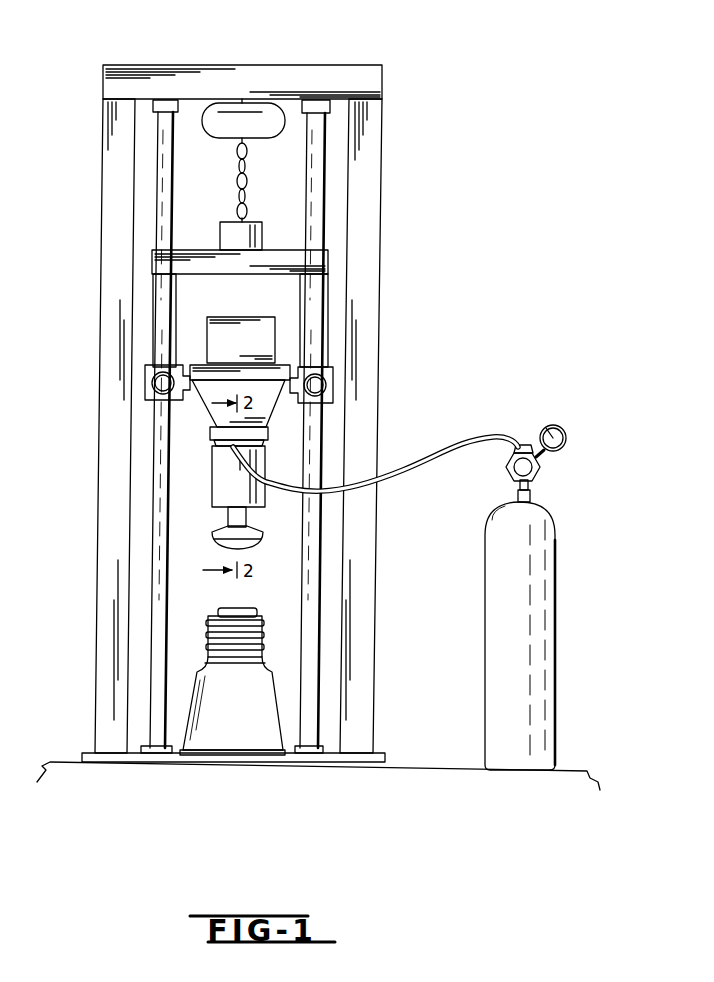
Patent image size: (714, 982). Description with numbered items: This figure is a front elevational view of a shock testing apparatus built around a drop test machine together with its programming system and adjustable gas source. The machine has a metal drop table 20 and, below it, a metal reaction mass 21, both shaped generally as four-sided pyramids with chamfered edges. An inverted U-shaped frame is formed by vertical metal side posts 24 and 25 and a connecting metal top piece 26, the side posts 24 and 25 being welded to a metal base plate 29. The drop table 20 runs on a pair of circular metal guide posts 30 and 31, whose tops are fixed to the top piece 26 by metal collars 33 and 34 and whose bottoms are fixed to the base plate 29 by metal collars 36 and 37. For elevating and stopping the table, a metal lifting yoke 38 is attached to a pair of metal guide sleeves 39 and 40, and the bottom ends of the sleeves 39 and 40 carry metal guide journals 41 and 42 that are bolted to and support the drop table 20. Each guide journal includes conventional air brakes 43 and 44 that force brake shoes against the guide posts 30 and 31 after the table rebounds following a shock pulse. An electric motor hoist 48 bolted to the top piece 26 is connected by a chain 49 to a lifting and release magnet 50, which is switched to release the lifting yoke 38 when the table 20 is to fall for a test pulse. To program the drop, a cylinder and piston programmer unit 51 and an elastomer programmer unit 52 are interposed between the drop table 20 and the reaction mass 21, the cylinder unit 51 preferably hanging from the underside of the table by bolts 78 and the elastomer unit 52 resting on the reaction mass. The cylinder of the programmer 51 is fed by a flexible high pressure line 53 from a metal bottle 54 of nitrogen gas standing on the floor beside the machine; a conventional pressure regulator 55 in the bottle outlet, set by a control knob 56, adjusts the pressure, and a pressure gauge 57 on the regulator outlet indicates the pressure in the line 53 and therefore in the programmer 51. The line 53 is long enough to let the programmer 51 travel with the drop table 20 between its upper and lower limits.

The drop table 20 is at (292, 368).
The reaction mass 21 is at (246, 735).
The side post 24 is at (103, 180).
The side post 25 is at (382, 192).
The top piece 26 is at (296, 66).
The base plate 29 is at (196, 763).
The guide post 30 is at (160, 203).
The guide post 31 is at (327, 160).
The collar 33 is at (157, 108).
The collar 34 is at (328, 113).
The collar 36 is at (143, 756).
The collar 37 is at (302, 756).
The lifting yoke 38 is at (292, 250).
The guide sleeve 39 is at (160, 302).
The guide sleeve 40 is at (328, 298).
The guide journal 41 is at (147, 372).
The guide journal 42 is at (320, 383).
The air brake 43 is at (158, 385).
The air brake 44 is at (322, 396).
The electric motor hoist 48 is at (228, 103).
The chain 49 is at (250, 190).
The lifting and release magnet 50 is at (220, 238).
The cylinder and piston programmer unit 51 is at (203, 484).
The elastomer programmer unit 52 is at (203, 632).
The flexible high pressure line 53 is at (400, 488).
The gas bottle 54 is at (556, 628).
The pressure regulator 55 is at (541, 469).
The control knob 56 is at (530, 479).
The pressure gauge 57 is at (556, 425).
The bolts 78 is at (213, 439).